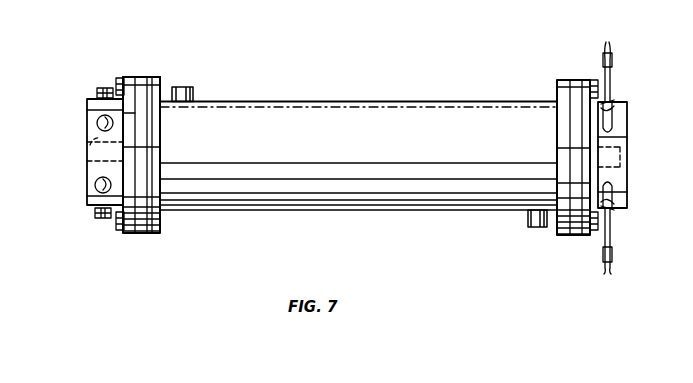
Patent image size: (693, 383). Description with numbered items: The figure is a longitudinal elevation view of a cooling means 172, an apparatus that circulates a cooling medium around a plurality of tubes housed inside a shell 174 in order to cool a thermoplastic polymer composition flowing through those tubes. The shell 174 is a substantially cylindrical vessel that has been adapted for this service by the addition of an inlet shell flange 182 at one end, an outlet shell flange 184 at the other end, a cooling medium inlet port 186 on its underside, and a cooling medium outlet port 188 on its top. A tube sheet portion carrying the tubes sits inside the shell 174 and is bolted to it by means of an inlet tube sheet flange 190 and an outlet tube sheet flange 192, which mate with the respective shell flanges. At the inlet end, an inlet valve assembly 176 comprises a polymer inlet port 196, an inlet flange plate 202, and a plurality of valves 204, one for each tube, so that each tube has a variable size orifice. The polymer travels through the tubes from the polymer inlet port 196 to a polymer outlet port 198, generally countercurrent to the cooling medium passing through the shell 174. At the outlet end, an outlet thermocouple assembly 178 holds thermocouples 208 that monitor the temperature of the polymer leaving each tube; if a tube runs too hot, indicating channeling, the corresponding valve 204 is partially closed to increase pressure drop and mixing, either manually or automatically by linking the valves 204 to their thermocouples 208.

The cooling means 172 is at (375, 98).
The shell 174 is at (247, 183).
The inlet valve assembly 176 is at (112, 85).
The outlet thermocouple assembly 178 is at (627, 101).
The inlet shell flange 182 is at (155, 87).
The outlet shell flange 184 is at (557, 100).
The cooling medium inlet port 186 is at (535, 218).
The cooling medium outlet port 188 is at (197, 90).
The inlet tube sheet flange 190 is at (143, 80).
The outlet tube sheet flange 192 is at (575, 80).
The polymer inlet port 196 is at (86, 147).
The polymer outlet port 198 is at (625, 157).
The inlet flange plate 202 is at (128, 234).
The valves 204 is at (98, 118).
The thermocouples 208 is at (617, 60).